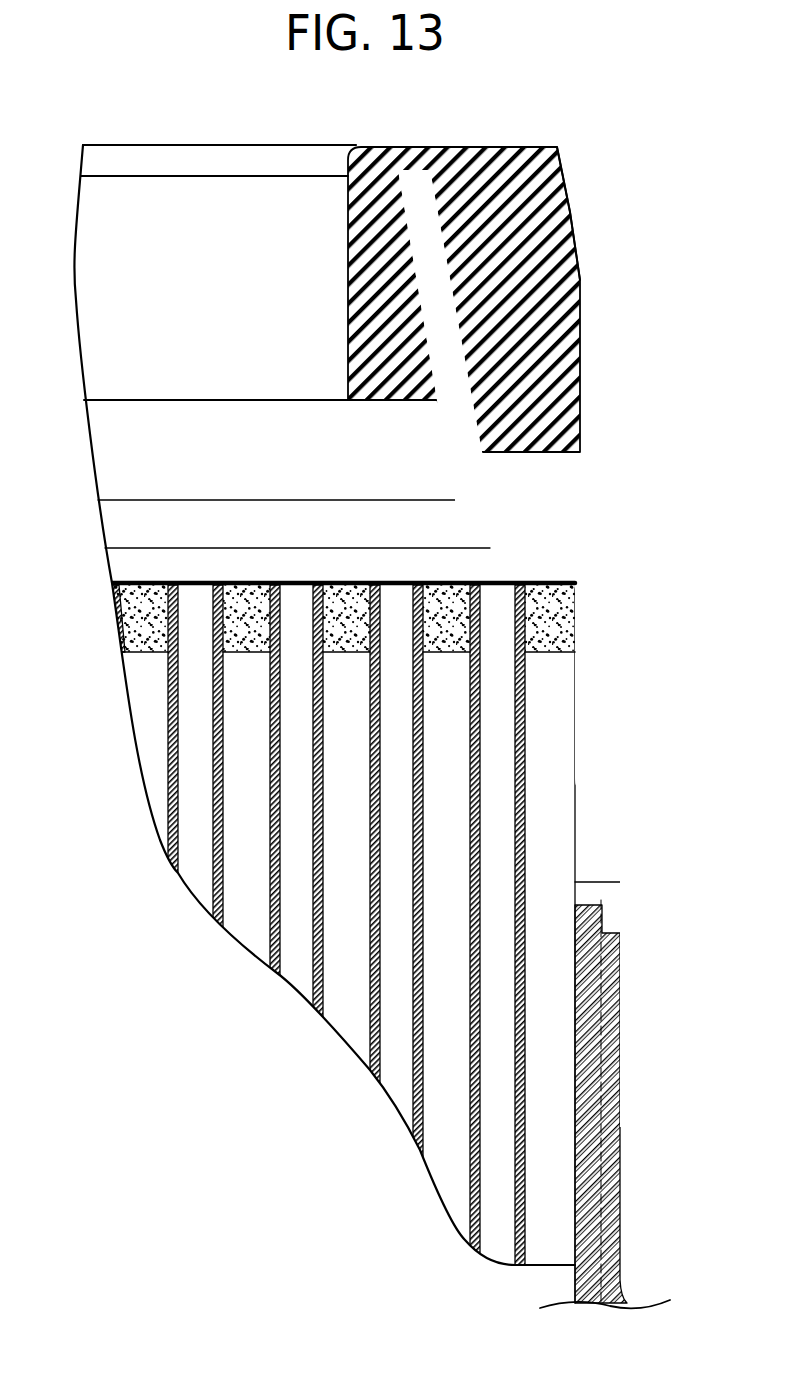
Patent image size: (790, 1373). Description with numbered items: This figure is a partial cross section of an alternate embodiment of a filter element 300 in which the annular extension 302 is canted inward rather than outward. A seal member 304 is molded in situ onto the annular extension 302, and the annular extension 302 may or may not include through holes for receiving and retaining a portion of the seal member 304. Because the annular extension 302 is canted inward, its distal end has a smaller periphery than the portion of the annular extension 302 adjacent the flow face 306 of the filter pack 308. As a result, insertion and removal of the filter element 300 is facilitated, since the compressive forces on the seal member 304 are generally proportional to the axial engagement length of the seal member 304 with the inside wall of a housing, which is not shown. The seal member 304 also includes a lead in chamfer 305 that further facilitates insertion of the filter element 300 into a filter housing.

The filter element 300 is at (563, 117).
The annular extension 302 is at (490, 494).
The seal member 304 is at (581, 330).
The lead in chamfer 305 is at (571, 213).
The flow face 306 is at (143, 582).
The filter pack 308 is at (198, 638).